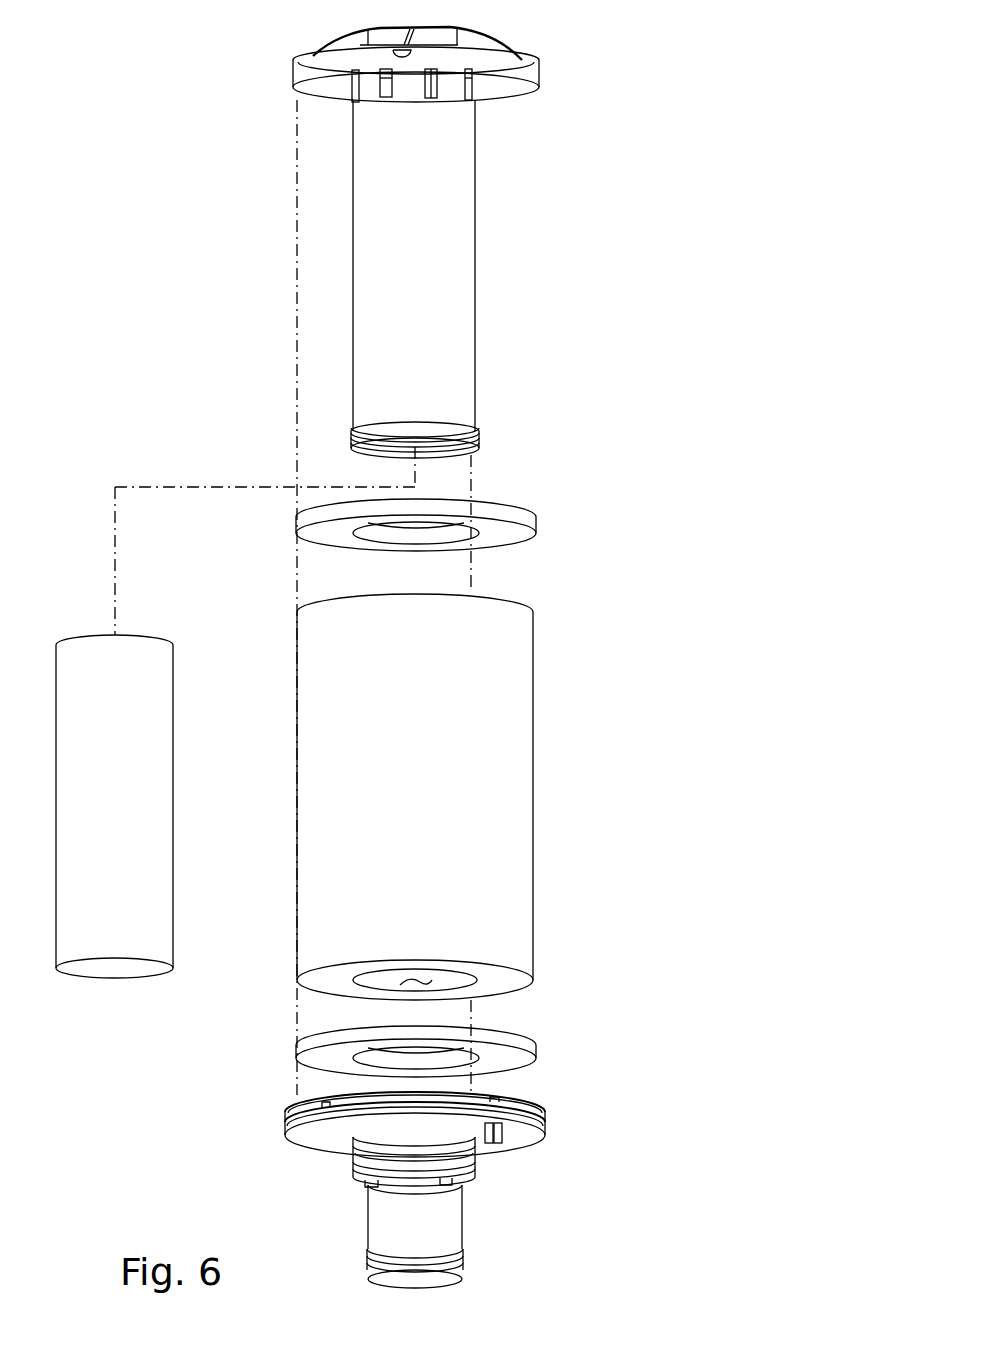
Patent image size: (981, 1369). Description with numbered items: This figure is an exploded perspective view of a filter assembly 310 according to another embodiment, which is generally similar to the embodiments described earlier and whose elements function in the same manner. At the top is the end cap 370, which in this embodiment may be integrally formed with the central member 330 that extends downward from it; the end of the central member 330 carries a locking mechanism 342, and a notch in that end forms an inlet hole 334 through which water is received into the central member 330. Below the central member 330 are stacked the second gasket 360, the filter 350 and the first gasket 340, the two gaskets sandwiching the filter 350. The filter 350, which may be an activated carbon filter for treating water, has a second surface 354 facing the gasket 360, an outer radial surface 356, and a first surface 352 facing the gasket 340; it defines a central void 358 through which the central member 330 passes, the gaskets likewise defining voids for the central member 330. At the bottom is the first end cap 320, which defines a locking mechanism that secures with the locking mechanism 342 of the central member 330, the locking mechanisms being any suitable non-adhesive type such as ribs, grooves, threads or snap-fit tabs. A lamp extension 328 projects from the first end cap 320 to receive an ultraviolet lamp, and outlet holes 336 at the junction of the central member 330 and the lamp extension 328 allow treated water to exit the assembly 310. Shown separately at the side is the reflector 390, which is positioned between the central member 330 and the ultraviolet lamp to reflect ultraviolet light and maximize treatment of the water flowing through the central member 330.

The filter assembly 310 is at (700, 226).
The end cap 370 is at (315, 33).
The inlet hole 334 is at (438, 84).
The central member 330 is at (492, 273).
The locking mechanism 342 is at (378, 428).
The second gasket 360 is at (297, 524).
The filter 350 is at (540, 800).
The second surface 354 is at (510, 601).
The outer radial surface 356 is at (534, 705).
The first surface 352 is at (505, 979).
The central void 358 is at (404, 983).
The first gasket 340 is at (535, 1050).
The first end cap 320 is at (530, 1186).
The outlet hole 336 is at (375, 1180).
The lamp extension 328 is at (437, 1228).
The reflector 390 is at (147, 703).